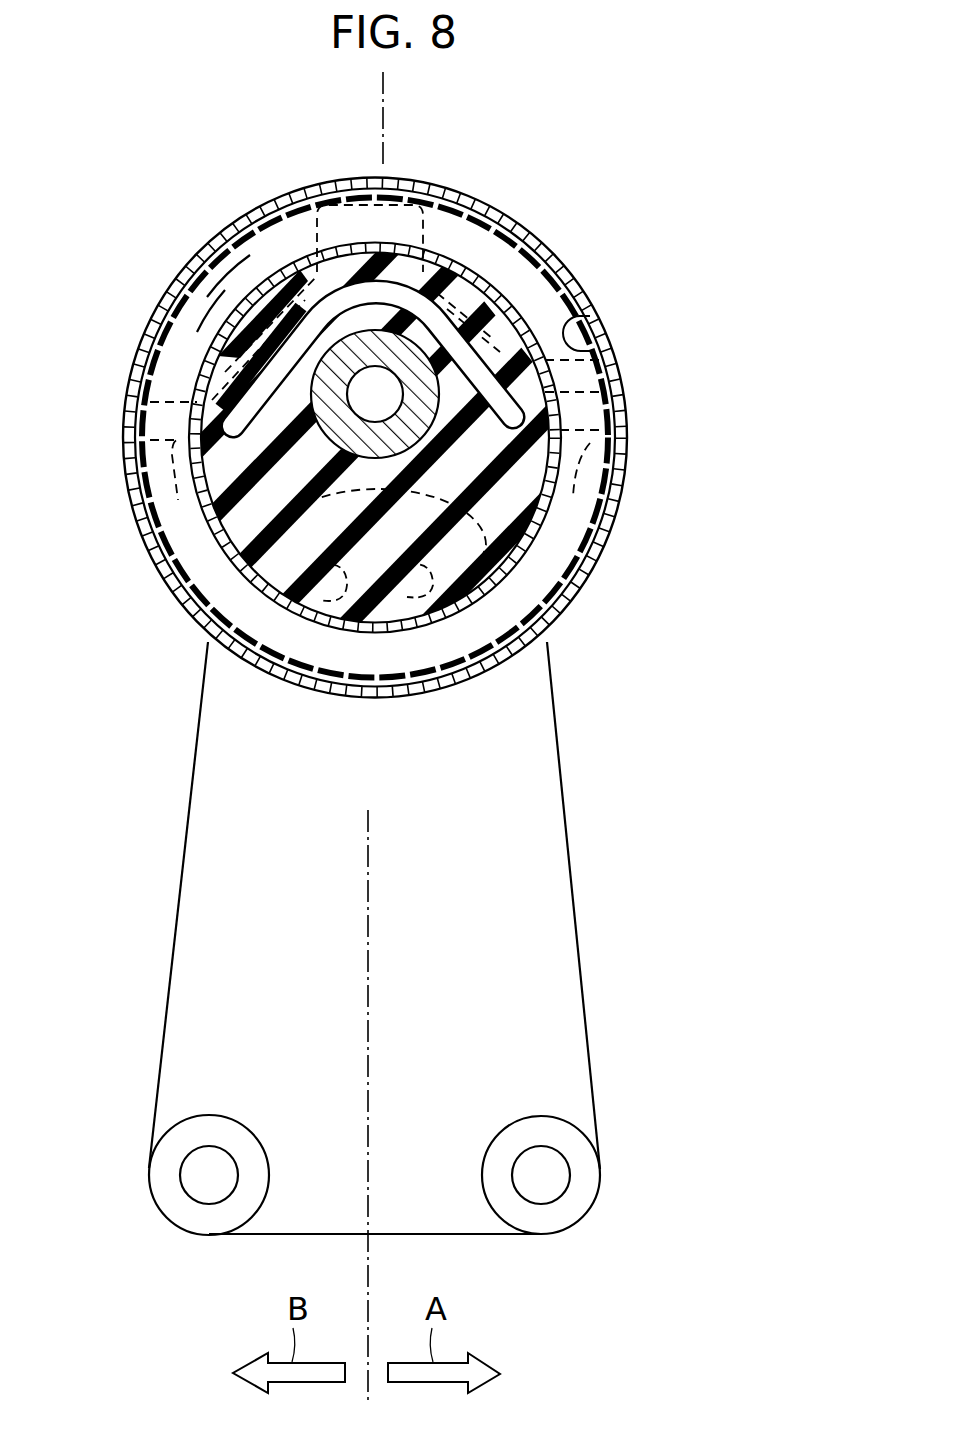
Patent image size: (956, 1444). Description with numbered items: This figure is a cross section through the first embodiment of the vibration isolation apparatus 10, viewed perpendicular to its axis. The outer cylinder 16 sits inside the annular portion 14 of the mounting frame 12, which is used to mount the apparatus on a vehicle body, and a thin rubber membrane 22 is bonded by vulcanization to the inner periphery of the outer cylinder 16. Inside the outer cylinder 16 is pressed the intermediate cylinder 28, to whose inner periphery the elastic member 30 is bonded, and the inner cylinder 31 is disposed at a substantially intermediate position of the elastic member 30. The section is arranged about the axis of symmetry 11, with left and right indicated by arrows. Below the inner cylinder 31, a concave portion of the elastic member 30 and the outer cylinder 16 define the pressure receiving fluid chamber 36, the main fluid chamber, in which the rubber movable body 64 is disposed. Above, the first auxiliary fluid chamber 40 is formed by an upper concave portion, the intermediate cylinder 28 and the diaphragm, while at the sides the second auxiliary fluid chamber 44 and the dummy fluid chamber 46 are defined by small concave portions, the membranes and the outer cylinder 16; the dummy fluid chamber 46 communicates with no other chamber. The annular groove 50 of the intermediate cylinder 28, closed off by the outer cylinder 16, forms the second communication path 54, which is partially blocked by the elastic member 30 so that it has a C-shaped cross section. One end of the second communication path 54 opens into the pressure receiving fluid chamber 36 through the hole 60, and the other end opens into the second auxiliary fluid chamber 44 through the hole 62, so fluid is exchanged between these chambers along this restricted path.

The vibration isolation apparatus 10 is at (553, 120).
The axis of symmetry 11 is at (368, 1262).
The mounting frame 12 is at (561, 770).
The annular portion 14 is at (500, 210).
The outer cylinder 16 is at (535, 233).
The thin rubber membrane 22 is at (603, 330).
The intermediate cylinder 28 is at (253, 293).
The elastic member 30 is at (523, 483).
The inner cylinder 31 is at (347, 347).
The pressure receiving fluid chamber 36 is at (347, 650).
The first auxiliary fluid chamber 40 is at (402, 220).
The second auxiliary fluid chamber 44 is at (162, 570).
The dummy fluid chamber 46 is at (588, 588).
The annular groove 50 is at (207, 297).
The second communication path 54 is at (197, 332).
The hole 60 is at (290, 650).
The hole 62 is at (195, 520).
The movable body 64 is at (403, 633).